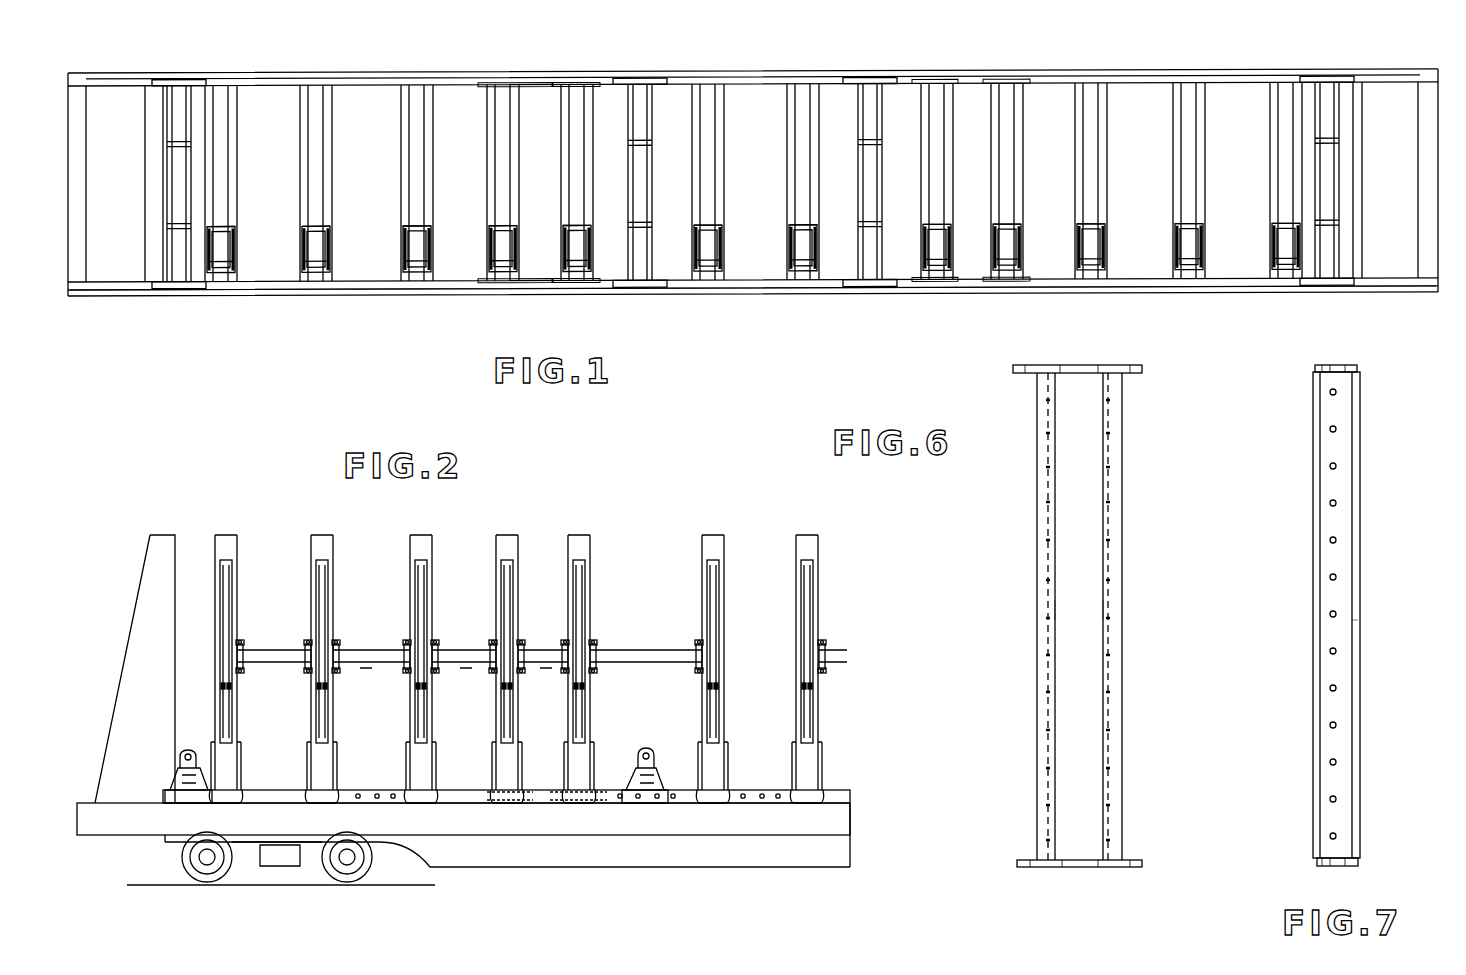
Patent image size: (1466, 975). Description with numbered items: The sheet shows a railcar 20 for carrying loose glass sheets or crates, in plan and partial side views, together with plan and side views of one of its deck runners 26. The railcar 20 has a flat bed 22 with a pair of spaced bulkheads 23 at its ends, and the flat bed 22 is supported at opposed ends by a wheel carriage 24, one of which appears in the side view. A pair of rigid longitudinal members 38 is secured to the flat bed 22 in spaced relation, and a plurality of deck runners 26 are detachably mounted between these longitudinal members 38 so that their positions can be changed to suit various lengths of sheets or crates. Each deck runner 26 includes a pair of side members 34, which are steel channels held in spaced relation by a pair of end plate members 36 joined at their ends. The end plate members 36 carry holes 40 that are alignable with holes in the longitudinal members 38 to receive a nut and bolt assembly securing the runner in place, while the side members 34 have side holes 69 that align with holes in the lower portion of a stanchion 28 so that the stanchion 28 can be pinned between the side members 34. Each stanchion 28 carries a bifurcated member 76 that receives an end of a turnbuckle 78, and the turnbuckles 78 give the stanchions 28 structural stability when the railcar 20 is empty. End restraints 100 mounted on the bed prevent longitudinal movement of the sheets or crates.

In FIG. 1, the railcar 20 is at (1222, 50).
In FIG. 2, the railcar 20 is at (830, 567).
In FIG. 1, the flat bed 22 is at (86, 305).
In FIG. 2, the flat bed 22 is at (878, 811).
In FIG. 1, the bulkheads 23 is at (118, 90).
In FIG. 2, the bulkheads 23 is at (150, 570).
In FIG. 2, the wheel carriage 24 is at (160, 861).
In FIG. 1, the deck runner 26 is at (395, 181).
In FIG. 6, the deck runner 26 is at (1150, 528).
In FIG. 7, the deck runner 26 is at (1395, 492).
In FIG. 2, the stanchion 28 is at (310, 580).
In FIG. 6, the side members 34 is at (1112, 596).
In FIG. 7, the side members 34 is at (1348, 628).
In FIG. 6, the end plate members 36 is at (1080, 364).
In FIG. 7, the end plate members 36 is at (1318, 366).
In FIG. 1, the rigid longitudinal members 38 is at (456, 74).
In FIG. 2, the rigid longitudinal members 38 is at (366, 789).
In FIG. 6, the holes 40 is at (1125, 366).
In FIG. 7, the holes 40 is at (1345, 365).
In FIG. 6, the side holes 69 is at (1048, 467).
In FIG. 7, the side holes 69 is at (1336, 578).
In FIG. 2, the bifurcated member 76 is at (305, 638).
In FIG. 2, the turnbuckle 78 is at (378, 672).
In FIG. 1, the end restraint 100 is at (200, 160).
In FIG. 2, the end restraint 100 is at (192, 745).